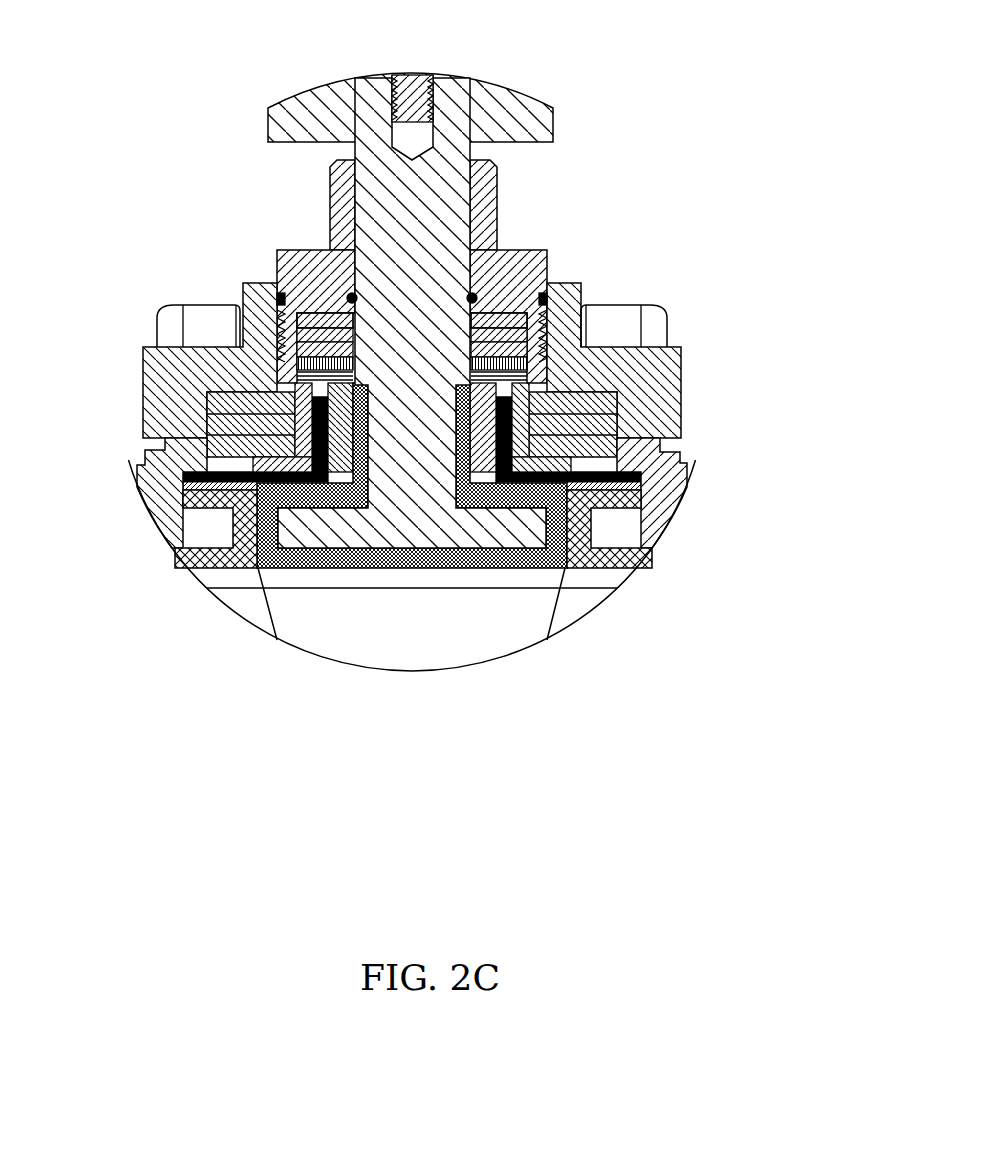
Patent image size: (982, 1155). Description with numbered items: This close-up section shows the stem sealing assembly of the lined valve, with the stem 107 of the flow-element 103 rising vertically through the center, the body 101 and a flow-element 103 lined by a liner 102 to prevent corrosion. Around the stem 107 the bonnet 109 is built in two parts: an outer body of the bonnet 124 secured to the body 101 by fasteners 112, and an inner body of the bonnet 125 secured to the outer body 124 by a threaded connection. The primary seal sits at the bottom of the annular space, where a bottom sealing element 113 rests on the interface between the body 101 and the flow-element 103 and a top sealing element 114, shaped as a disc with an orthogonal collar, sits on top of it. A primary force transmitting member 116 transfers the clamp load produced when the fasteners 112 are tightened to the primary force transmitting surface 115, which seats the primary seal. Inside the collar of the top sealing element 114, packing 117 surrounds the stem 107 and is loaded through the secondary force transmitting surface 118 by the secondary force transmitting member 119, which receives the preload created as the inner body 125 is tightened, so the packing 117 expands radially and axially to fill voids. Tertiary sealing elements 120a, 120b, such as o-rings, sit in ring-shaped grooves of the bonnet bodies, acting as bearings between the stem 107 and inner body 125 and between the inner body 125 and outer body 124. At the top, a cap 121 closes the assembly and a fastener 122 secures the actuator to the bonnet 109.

The body 101 is at (603, 530).
The liner 102 is at (217, 557).
The flow-element 103 is at (287, 615).
The stem 107 is at (479, 533).
The bonnet 109 is at (630, 450).
The fasteners 112 is at (200, 338).
The bottom sealing element 113 is at (230, 510).
The top sealing element 114 is at (316, 433).
The primary force transmitting surface 115 is at (518, 398).
The primary force transmitting member 116 is at (235, 448).
The packing 117 is at (281, 371).
The secondary force transmitting surface 118 is at (348, 370).
The secondary force transmitting member 119 is at (338, 322).
The tertiary sealing element 120a is at (474, 296).
The tertiary sealing element 120b is at (547, 300).
The cap 121 is at (532, 118).
The fastener 122 is at (420, 98).
The outer body of the bonnet 124 is at (560, 292).
The inner body of the bonnet 125 is at (492, 213).